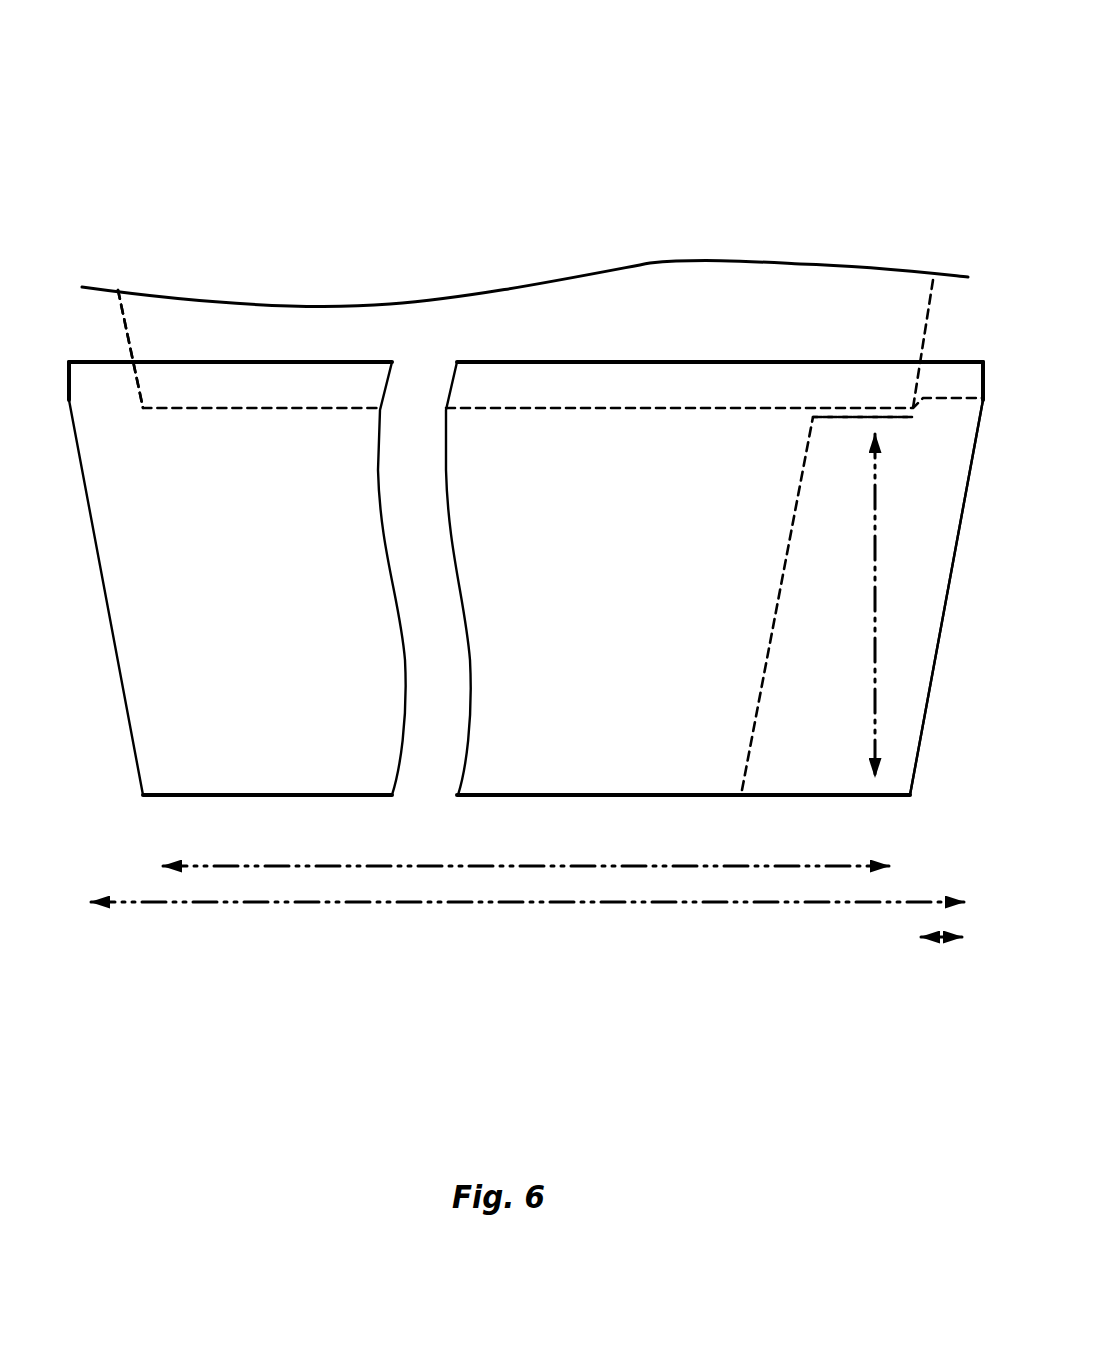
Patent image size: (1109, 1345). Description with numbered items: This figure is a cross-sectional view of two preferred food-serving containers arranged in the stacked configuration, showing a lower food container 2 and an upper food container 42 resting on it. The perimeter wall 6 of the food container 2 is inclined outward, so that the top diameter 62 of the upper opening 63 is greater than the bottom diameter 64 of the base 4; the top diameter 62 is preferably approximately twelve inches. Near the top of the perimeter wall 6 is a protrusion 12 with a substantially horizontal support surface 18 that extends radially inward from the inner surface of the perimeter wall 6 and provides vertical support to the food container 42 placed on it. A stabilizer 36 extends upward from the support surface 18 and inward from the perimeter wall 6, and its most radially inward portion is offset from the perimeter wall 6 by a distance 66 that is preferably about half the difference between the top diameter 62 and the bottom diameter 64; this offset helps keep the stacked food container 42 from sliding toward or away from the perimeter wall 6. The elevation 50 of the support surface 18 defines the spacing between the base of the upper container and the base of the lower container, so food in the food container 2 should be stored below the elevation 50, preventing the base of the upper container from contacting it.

The food container 2 is at (298, 650).
The base 4 is at (644, 812).
The perimeter wall 6 is at (950, 656).
The protrusion 12 is at (811, 548).
The support surface 18 is at (849, 400).
The stabilizer 36 is at (947, 366).
The food container 42 is at (664, 312).
The elevation 50 is at (873, 645).
The top diameter 62 is at (500, 904).
The upper opening 63 is at (103, 334).
The bottom diameter 64 is at (378, 866).
The distance 66 is at (943, 937).